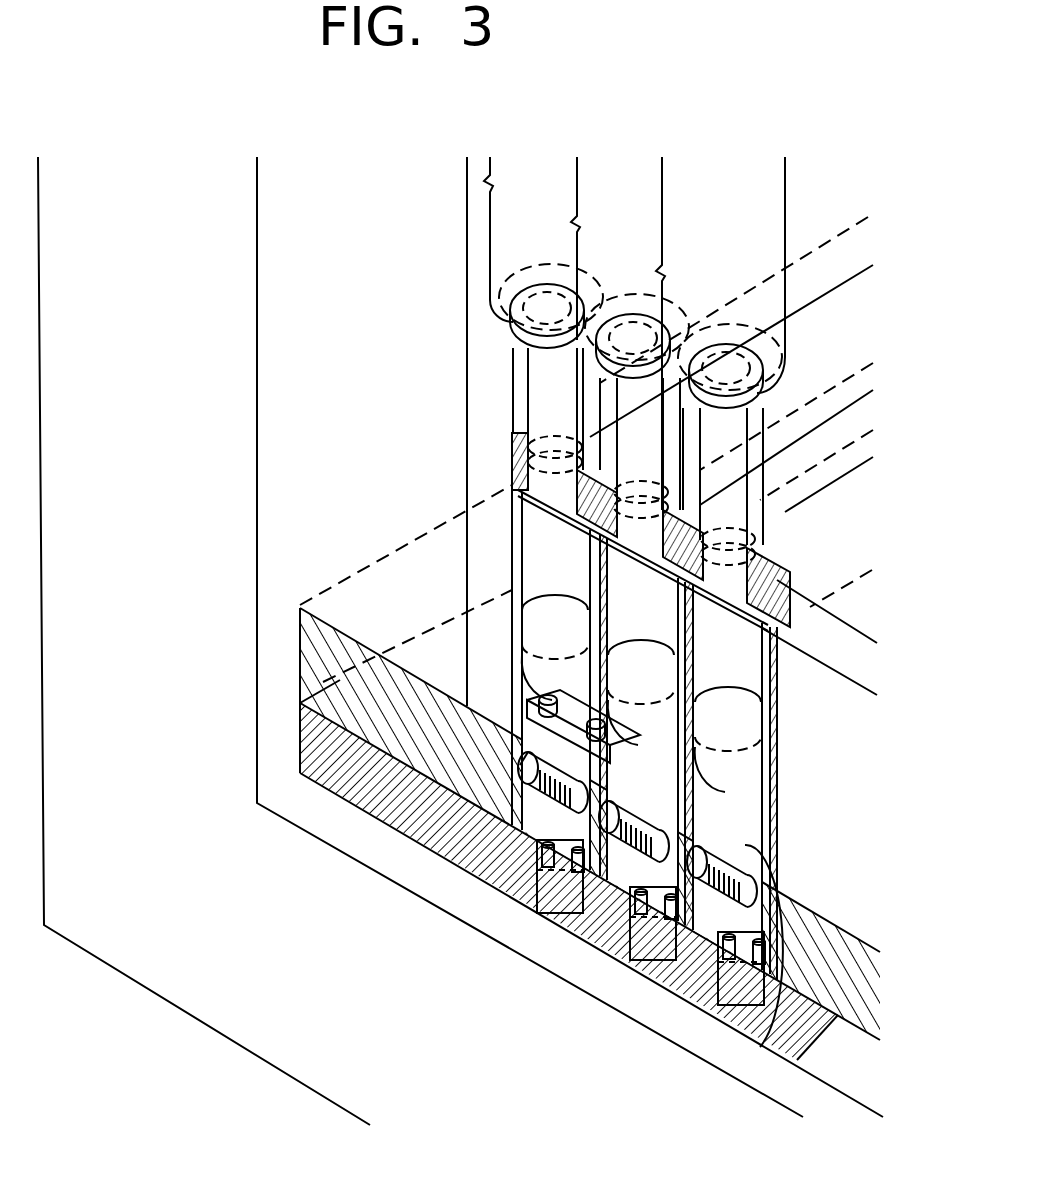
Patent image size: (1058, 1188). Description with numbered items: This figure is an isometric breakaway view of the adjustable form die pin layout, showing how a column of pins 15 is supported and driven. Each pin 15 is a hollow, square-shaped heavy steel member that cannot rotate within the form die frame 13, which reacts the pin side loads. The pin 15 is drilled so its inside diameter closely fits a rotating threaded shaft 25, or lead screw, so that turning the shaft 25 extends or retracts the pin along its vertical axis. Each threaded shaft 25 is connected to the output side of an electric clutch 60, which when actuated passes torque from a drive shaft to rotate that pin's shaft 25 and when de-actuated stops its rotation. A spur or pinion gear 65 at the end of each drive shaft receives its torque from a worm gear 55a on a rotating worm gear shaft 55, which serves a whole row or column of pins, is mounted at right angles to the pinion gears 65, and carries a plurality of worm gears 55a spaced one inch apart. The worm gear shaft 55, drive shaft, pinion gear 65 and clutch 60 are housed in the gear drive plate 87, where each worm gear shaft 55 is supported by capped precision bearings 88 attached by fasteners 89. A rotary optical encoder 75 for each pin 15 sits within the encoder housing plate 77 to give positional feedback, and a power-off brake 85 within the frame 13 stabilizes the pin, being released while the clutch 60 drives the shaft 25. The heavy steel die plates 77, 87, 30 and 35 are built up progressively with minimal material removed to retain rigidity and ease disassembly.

The form die frame 13 is at (376, 318).
The pin 15 is at (507, 218).
The rotating threaded shaft 25 is at (543, 387).
The die plate 30 is at (807, 600).
The die plate 35 is at (836, 782).
The worm gear shaft 55 is at (530, 820).
The worm gear 55a is at (457, 800).
The electric clutch 60 is at (765, 1048).
The pinion gear 65 is at (583, 860).
The rotary optical encoder 75 is at (540, 915).
The encoder housing plate 77 is at (312, 745).
The power-off brake 85 is at (535, 527).
The gear drive plate 87 is at (313, 656).
The capped precision bearing 88 is at (523, 735).
The fastener 89 is at (527, 662).